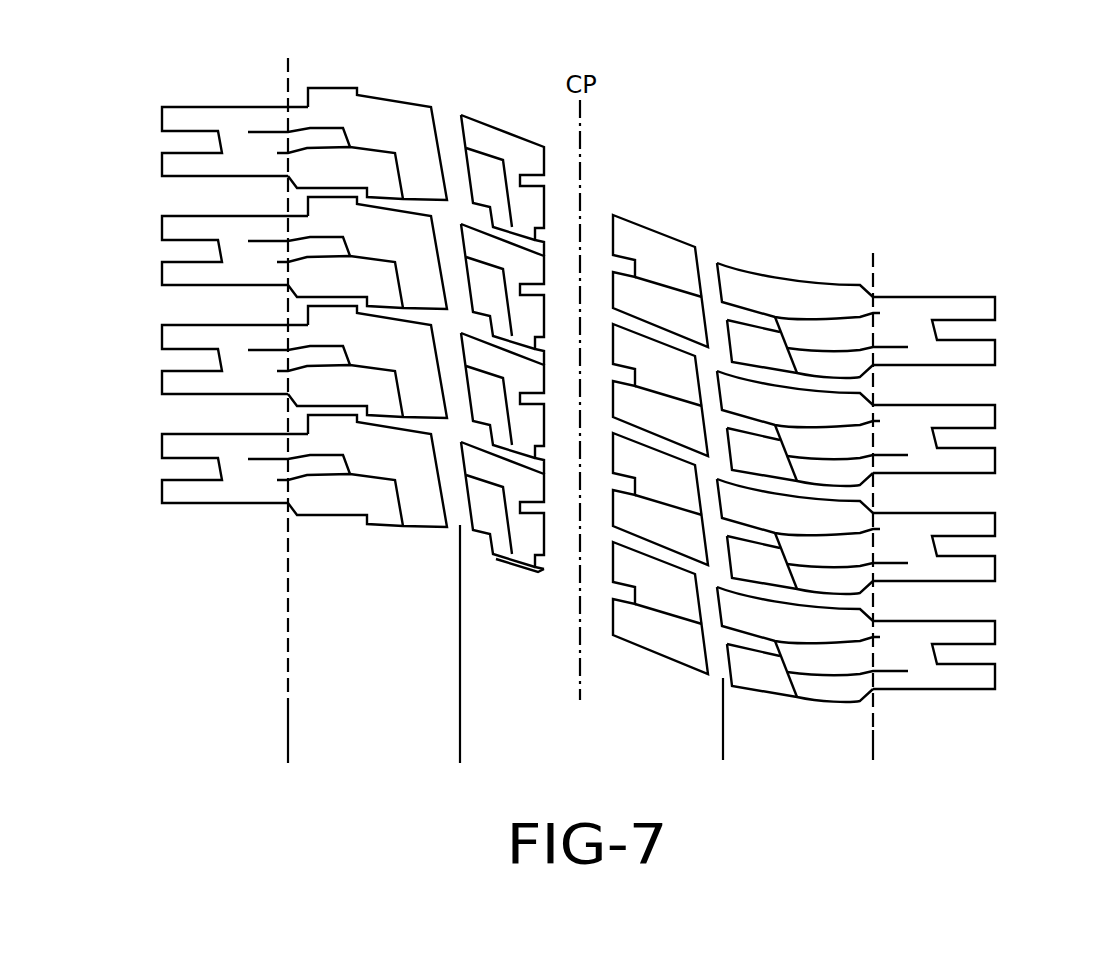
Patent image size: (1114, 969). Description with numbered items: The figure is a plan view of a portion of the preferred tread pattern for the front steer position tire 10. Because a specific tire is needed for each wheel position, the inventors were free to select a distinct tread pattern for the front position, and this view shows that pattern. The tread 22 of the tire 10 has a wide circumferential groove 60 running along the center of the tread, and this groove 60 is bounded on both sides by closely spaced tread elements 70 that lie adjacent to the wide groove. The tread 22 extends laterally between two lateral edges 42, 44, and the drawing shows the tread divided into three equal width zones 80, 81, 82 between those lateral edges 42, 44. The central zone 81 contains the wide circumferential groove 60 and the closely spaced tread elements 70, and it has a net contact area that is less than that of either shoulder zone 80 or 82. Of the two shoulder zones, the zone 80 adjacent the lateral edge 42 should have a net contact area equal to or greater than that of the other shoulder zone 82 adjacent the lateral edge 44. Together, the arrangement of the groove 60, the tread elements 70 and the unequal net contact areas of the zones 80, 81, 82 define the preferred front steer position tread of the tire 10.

The tire 10 is at (1040, 330).
The tread 22 is at (392, 120).
The lateral edge 42 is at (288, 77).
The lateral edge 44 is at (874, 268).
The wide circumferential groove 60 is at (593, 220).
The tread elements 70 is at (500, 148).
The shoulder zone 80 is at (288, 744).
The central zone 81 is at (723, 744).
The shoulder zone 82 is at (873, 744).